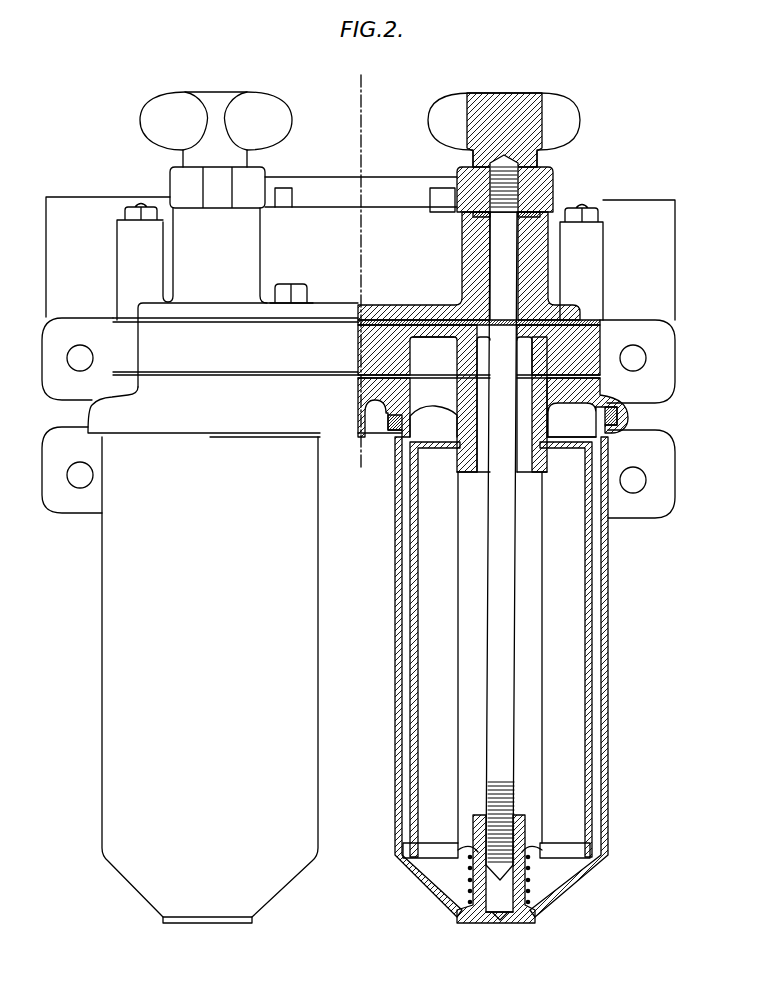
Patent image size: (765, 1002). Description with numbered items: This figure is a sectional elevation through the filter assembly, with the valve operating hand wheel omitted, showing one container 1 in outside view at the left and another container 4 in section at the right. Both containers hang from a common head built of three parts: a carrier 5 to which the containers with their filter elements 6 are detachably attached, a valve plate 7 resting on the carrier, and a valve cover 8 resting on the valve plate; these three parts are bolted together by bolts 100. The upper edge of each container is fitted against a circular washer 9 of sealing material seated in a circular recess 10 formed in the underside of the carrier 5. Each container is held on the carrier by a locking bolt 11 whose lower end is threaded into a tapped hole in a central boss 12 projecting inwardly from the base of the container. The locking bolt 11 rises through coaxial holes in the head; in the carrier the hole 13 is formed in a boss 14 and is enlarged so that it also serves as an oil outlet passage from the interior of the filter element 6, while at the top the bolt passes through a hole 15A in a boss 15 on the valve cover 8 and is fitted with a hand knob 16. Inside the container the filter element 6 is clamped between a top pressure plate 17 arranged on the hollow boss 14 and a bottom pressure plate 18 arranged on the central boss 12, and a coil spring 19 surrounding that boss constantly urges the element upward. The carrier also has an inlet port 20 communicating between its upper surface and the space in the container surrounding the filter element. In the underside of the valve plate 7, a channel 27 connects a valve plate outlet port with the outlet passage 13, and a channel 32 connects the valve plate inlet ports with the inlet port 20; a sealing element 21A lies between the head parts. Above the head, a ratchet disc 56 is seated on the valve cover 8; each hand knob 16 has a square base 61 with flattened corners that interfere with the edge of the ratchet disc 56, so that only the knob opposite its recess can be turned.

The container 1 is at (118, 593).
The container 4 is at (606, 622).
The carrier 5 is at (138, 420).
The filter element 6 is at (591, 600).
The valve plate 7 is at (567, 362).
The valve cover 8 is at (305, 218).
The circular washer 9 is at (624, 418).
The circular recess 10 is at (379, 440).
The locking bolt 11 is at (505, 617).
The central boss 12 is at (527, 878).
The hole 13 is at (481, 473).
The boss 14 is at (472, 417).
The boss 15 is at (243, 257).
The hole 15A is at (494, 251).
The hand knob 16 is at (216, 94).
The top pressure plate 17 is at (561, 452).
The bottom pressure plate 18 is at (441, 860).
The coil spring 19 is at (478, 872).
The inlet port 20 is at (422, 401).
The gasket 21A is at (523, 327).
The channel 27 is at (487, 360).
The channel 32 is at (432, 340).
The ratchet disc 56 is at (372, 176).
The base 61 is at (549, 180).
The bolt 100 is at (139, 203).